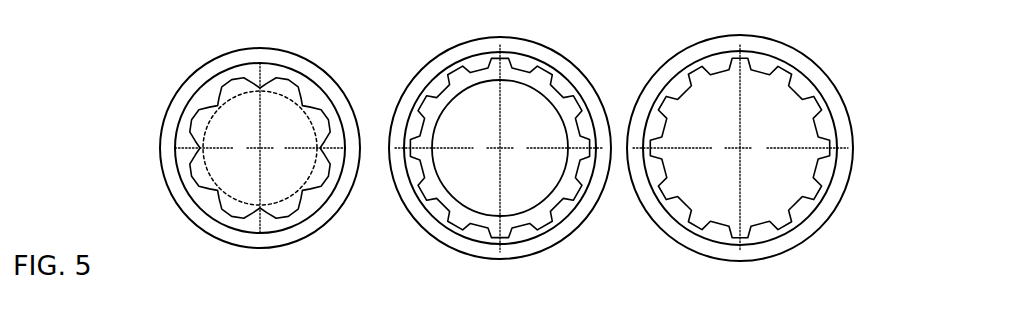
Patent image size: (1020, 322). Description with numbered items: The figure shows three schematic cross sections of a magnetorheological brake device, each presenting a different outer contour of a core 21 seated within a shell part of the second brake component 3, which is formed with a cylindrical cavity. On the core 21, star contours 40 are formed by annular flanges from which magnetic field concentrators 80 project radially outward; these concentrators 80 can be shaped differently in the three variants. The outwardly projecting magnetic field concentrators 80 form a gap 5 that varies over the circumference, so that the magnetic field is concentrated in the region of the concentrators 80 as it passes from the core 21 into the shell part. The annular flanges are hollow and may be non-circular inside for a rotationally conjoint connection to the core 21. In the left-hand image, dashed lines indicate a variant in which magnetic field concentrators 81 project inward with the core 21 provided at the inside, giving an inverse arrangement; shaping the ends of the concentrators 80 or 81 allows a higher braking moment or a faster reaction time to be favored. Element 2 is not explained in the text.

The cable 2 is at (267, 177).
The second brake component 3 is at (238, 237).
The gap 5 is at (210, 202).
The core 21 is at (240, 88).
The star contours 40 is at (470, 82).
The magnetic field concentrators 80 is at (283, 88).
The magnetic field concentrators 81 is at (196, 146).